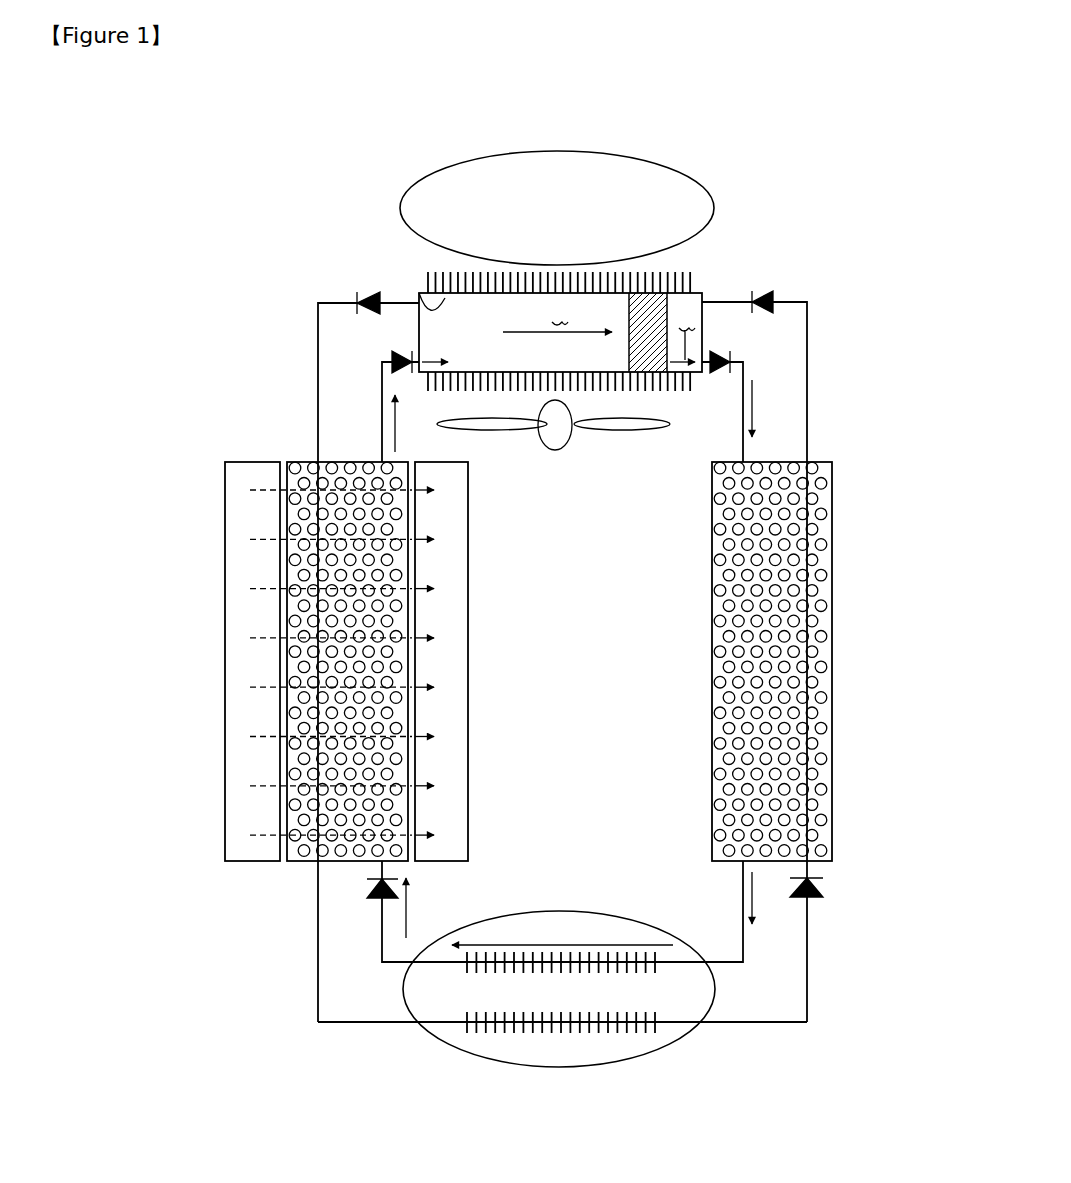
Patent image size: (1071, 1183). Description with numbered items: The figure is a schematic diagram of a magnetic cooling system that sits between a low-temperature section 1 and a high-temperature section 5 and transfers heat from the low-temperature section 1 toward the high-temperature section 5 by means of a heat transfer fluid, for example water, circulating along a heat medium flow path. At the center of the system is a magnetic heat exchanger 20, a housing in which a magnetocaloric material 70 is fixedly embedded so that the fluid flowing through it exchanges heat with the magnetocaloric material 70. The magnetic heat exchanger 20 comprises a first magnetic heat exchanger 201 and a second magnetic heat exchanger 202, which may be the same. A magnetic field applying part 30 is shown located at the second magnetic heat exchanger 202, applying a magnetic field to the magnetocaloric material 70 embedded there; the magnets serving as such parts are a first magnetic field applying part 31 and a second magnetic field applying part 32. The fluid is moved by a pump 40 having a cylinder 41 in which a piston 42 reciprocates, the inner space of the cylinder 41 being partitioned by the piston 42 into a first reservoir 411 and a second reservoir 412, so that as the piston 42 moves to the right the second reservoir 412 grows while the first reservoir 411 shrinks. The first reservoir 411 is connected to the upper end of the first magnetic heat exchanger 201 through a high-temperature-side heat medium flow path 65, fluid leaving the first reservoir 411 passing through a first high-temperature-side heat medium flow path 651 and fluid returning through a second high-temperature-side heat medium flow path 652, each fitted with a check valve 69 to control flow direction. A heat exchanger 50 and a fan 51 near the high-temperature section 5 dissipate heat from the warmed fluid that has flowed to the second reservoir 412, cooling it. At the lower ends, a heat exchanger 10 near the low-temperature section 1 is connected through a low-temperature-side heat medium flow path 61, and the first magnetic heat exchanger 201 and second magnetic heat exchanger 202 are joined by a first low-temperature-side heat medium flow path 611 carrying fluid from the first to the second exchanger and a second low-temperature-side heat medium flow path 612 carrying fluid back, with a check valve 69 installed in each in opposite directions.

The low-temperature section 1 is at (559, 1026).
The high-temperature section 5 is at (690, 175).
The heat exchanger 10 is at (540, 968).
The magnetic heat exchanger 20 is at (567, 628).
The first magnetic heat exchanger 201 is at (822, 462).
The second magnetic heat exchanger 202 is at (557, 628).
The magnetic field applying part 30 is at (346, 661).
The first magnetic field applying part 31 is at (470, 836).
The second magnetic field applying part 32 is at (225, 835).
The pump 40 is at (555, 365).
The cylinder 41 is at (428, 300).
The first reservoir 411 is at (687, 372).
The second reservoir 412 is at (565, 330).
The piston 42 is at (648, 356).
The heat exchanger 50 is at (695, 272).
The fan 51 is at (553, 442).
The low-temperature-side heat medium flow path 61 is at (625, 941).
The first low-temperature-side heat medium flow path 611 is at (740, 905).
The second low-temperature-side heat medium flow path 612 is at (807, 932).
The high-temperature-side heat medium flow path 65 is at (558, 662).
The first high-temperature-side heat medium flow path 651 is at (383, 428).
The second high-temperature-side heat medium flow path 652 is at (318, 365).
The check valve 69 is at (372, 292).
The magnetocaloric material 70 is at (402, 660).